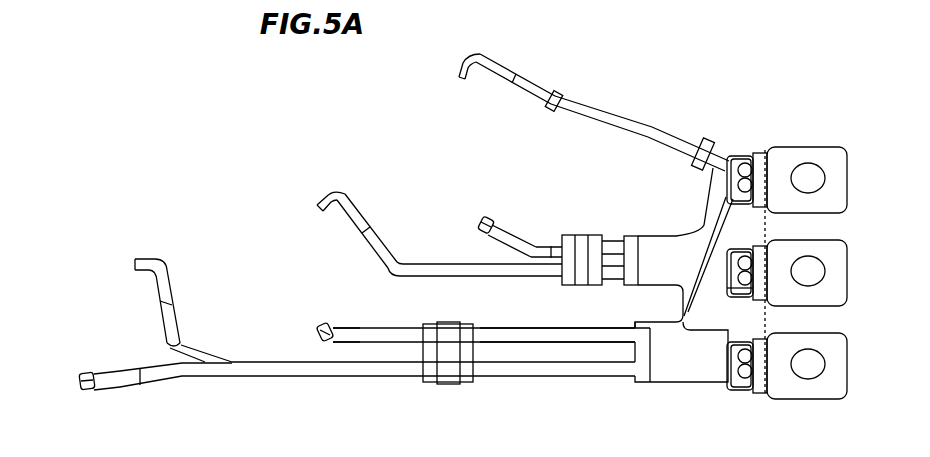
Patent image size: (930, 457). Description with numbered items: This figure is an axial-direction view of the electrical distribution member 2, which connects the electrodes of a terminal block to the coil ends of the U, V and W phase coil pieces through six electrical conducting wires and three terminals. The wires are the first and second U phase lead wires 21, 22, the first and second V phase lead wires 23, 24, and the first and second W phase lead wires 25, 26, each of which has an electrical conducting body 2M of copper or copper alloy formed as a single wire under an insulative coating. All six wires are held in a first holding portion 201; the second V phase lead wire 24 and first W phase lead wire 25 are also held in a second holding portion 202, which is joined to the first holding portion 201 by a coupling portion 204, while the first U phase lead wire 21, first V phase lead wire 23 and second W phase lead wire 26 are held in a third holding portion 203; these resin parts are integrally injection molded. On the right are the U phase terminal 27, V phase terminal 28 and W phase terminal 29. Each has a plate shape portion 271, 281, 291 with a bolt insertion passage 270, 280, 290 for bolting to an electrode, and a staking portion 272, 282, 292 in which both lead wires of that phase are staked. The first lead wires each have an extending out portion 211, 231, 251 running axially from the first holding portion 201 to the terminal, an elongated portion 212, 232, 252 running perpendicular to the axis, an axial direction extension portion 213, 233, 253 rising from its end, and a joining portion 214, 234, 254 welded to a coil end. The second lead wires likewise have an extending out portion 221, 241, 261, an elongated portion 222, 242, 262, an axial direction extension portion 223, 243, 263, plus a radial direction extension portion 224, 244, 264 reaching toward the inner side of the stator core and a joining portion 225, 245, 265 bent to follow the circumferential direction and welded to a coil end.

The electrical distribution member 2 is at (843, 413).
The first U phase lead wire 21 is at (398, 322).
The electrical conducting body 2M is at (502, 75).
The second U phase lead wire 22 is at (512, 56).
The extending out portion 221 is at (758, 157).
The elongated portion 222 is at (657, 127).
The axial direction extension portion 223 is at (560, 112).
The radial direction extension portion 224 is at (523, 88).
The joining portion 225 is at (458, 70).
The first V phase lead wire 23 is at (123, 366).
The extending out portion 231 is at (747, 253).
The elongated portion 232 is at (200, 367).
The axial direction extension portion 233 is at (90, 391).
The joining portion 234 is at (85, 372).
The second V phase lead wire 24 is at (352, 242).
The extending out portion 241 is at (737, 287).
The elongated portion 242 is at (432, 268).
The axial direction extension portion 243 is at (402, 262).
The radial direction extension portion 244 is at (370, 248).
The joining portion 245 is at (320, 202).
The first W phase lead wire 25 is at (631, 224).
The extending out portion 251 is at (742, 357).
The elongated portion 252 is at (532, 247).
The axial direction extension portion 253 is at (487, 234).
The joining portion 254 is at (483, 213).
The second W phase lead wire 26 is at (173, 258).
The extending out portion 261 is at (730, 383).
The elongated portion 262 is at (257, 370).
The axial direction extension portion 263 is at (190, 351).
The radial direction extension portion 264 is at (170, 330).
The joining portion 265 is at (137, 262).
The U phase terminal 27 is at (857, 152).
The bolt insertion passage 270 is at (805, 175).
The plate shape portion 271 is at (833, 197).
The staking portion 272 is at (735, 157).
The V phase terminal 28 is at (855, 282).
The bolt insertion passage 280 is at (812, 270).
The plate shape portion 281 is at (837, 292).
The staking portion 282 is at (733, 263).
The W phase terminal 29 is at (857, 378).
The bolt insertion passage 290 is at (812, 357).
The plate shape portion 291 is at (837, 387).
The staking portion 292 is at (745, 391).
The first holding portion 201 is at (663, 378).
The second holding portion 202 is at (593, 240).
The third holding portion 203 is at (447, 373).
The coupling portion 204 is at (615, 270).
The extending out portion 211 is at (747, 157).
The elongated portion 212 is at (558, 338).
The axial direction extension portion 213 is at (325, 341).
The joining portion 214 is at (318, 328).